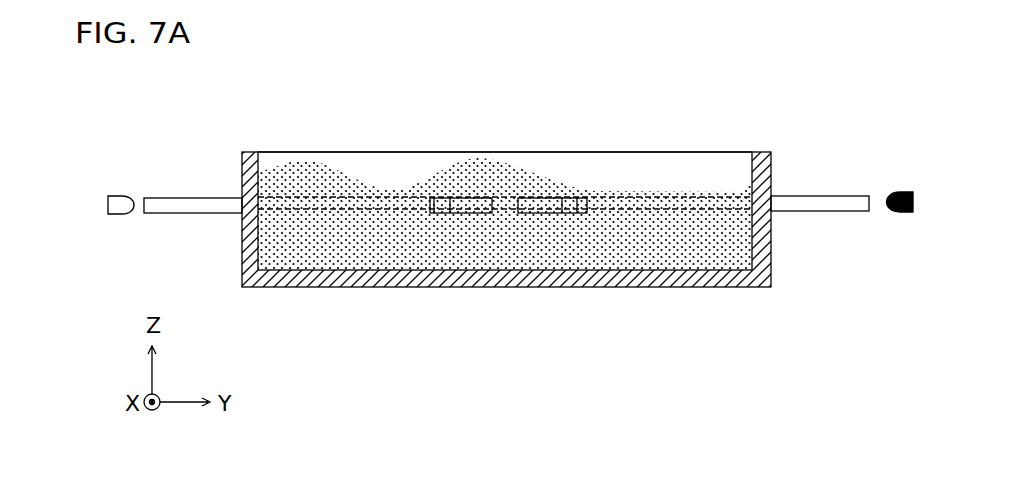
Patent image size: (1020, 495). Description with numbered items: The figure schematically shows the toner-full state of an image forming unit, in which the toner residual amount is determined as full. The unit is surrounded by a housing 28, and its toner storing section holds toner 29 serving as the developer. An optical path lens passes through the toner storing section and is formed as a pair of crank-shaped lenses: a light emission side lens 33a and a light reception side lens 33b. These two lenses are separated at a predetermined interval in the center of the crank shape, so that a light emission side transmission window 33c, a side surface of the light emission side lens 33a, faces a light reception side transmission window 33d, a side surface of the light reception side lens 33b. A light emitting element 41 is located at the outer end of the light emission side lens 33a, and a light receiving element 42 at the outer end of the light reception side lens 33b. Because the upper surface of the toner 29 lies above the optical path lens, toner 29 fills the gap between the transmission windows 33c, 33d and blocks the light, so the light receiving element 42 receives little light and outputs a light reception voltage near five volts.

The housing 28 is at (245, 247).
The toner 29 is at (632, 230).
The light emission side lens 33a is at (186, 197).
The light reception side lens 33b is at (818, 198).
The light emission side transmission window 33c is at (495, 199).
The light reception side transmission window 33d is at (512, 200).
The light emitting element 41 is at (124, 195).
The light receiving element 42 is at (895, 213).